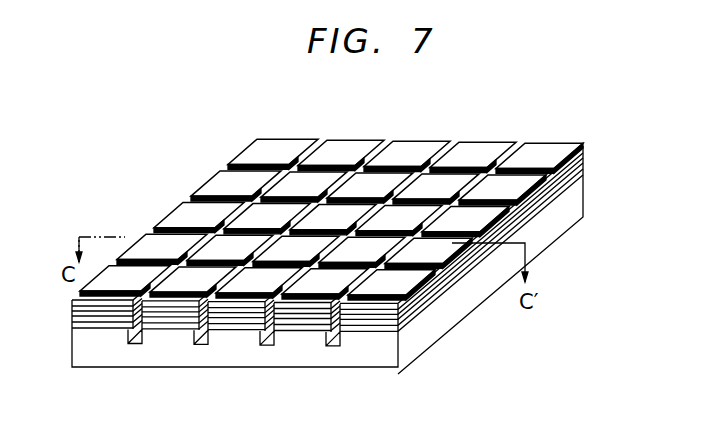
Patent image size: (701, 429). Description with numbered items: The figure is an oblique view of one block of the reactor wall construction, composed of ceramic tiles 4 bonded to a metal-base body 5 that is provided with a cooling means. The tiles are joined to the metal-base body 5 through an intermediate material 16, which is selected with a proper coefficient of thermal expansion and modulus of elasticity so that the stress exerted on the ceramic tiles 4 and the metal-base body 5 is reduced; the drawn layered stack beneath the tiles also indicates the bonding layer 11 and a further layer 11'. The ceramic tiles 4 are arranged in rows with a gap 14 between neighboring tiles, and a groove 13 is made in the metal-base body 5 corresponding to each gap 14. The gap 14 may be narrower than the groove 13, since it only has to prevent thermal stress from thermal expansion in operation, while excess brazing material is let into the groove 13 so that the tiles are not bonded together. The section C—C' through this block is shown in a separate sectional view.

The ceramic tiles 4 is at (547, 141).
The gap 14 is at (450, 140).
The upper layer 11' is at (363, 239).
The bonding layer 11 is at (356, 250).
The intermediate material 16 is at (78, 317).
The groove 13 is at (268, 344).
The metal-base body 5 is at (243, 366).